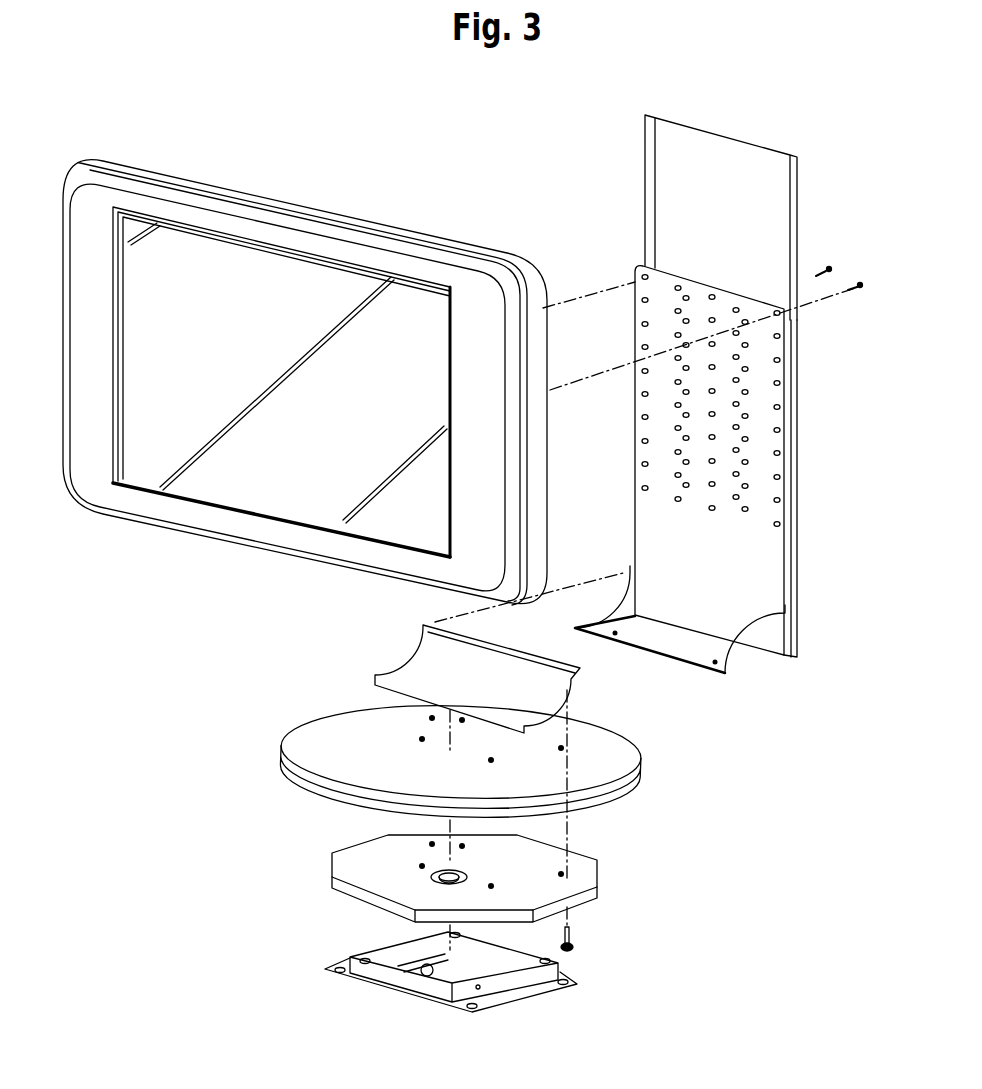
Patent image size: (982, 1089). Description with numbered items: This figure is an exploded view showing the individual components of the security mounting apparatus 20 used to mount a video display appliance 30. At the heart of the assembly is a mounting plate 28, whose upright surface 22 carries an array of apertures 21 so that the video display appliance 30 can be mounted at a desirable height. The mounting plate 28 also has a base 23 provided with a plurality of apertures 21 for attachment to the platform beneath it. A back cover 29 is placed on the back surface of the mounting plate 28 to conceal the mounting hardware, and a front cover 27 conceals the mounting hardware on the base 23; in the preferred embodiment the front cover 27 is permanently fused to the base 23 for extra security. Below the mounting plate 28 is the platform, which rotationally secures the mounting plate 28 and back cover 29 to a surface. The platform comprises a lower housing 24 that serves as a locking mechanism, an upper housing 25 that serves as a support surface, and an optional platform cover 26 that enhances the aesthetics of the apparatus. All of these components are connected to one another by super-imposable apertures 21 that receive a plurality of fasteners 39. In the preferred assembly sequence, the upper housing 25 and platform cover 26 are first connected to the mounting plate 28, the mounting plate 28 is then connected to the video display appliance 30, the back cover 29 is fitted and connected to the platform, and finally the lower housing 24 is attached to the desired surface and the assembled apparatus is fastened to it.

The security mounting apparatus 20 is at (710, 409).
The apertures 21 is at (748, 370).
The surface 22 is at (719, 637).
The base 23 is at (729, 649).
The lower housing 24 is at (325, 970).
The upper housing 25 is at (352, 853).
The platform cover 26 is at (330, 729).
The front cover 27 is at (402, 651).
The mounting plate 28 is at (620, 515).
The back cover 29 is at (627, 186).
The video display appliance 30 is at (249, 182).
The fasteners 39 is at (823, 268).